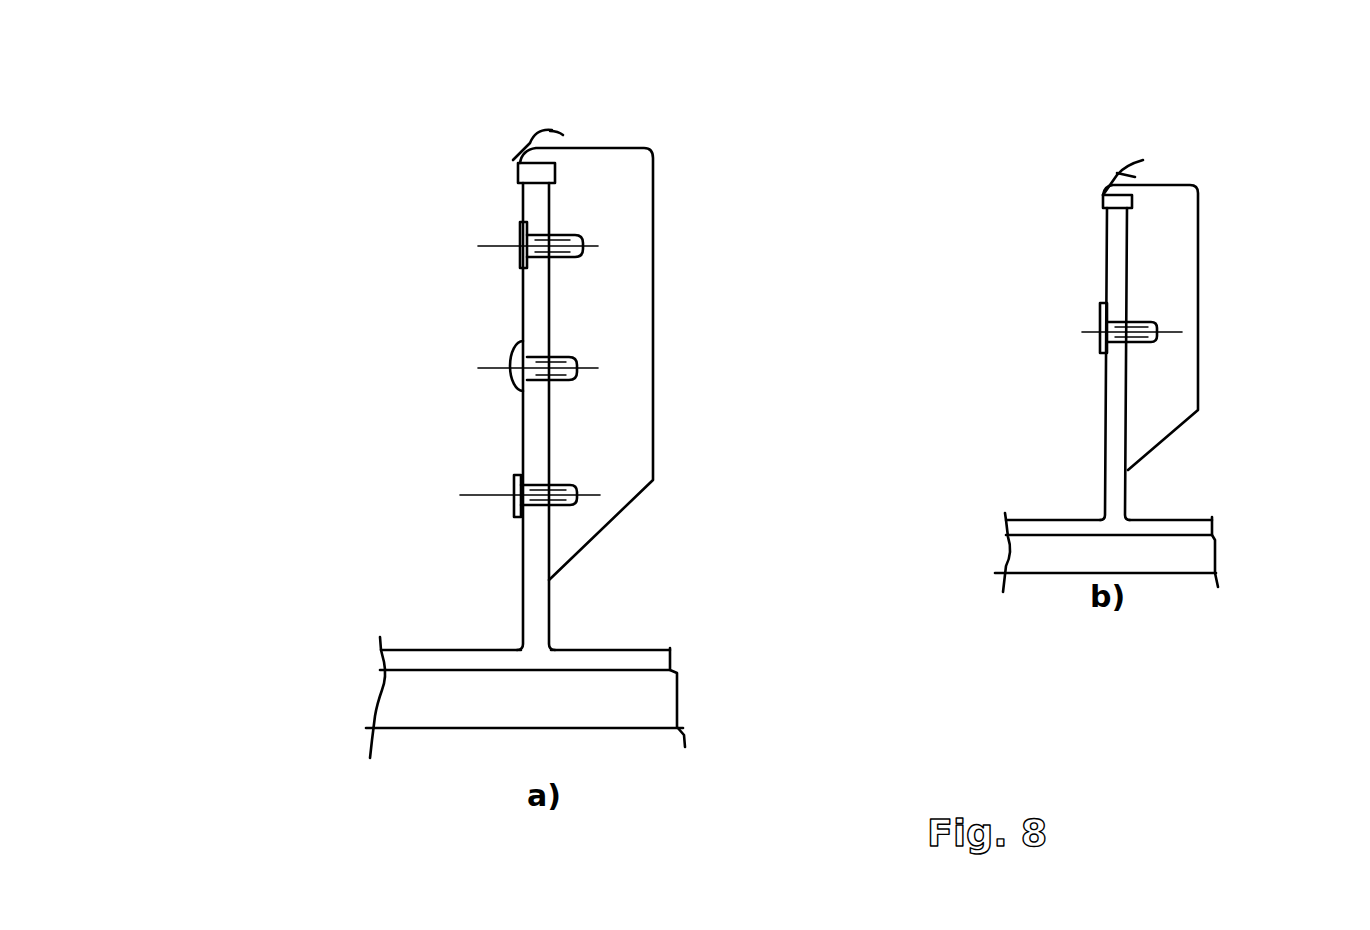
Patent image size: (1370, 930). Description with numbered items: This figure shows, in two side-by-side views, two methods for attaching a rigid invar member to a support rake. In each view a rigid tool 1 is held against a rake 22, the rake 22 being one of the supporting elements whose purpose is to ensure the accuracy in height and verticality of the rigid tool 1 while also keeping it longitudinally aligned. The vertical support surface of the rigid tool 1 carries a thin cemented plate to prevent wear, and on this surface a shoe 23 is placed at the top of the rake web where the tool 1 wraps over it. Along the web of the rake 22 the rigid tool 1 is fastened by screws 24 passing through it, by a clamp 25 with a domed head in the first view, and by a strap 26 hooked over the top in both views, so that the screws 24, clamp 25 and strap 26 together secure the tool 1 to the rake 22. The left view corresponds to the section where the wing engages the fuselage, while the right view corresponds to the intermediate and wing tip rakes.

The rigid tool 1 is at (617, 413).
The rake 22 is at (537, 622).
The shoe 23 is at (540, 177).
The screw 24 is at (519, 239).
The clamp 25 is at (512, 357).
The strap 26 is at (552, 130).